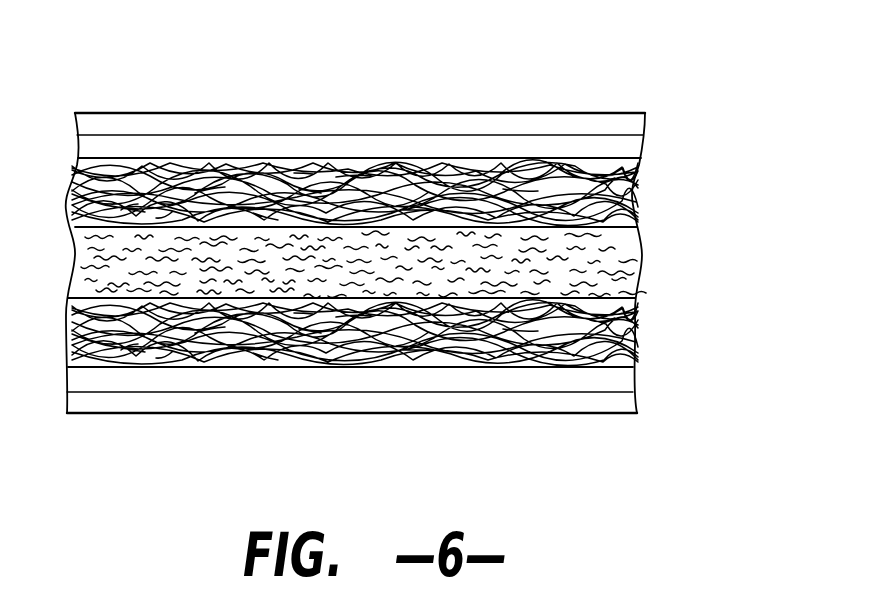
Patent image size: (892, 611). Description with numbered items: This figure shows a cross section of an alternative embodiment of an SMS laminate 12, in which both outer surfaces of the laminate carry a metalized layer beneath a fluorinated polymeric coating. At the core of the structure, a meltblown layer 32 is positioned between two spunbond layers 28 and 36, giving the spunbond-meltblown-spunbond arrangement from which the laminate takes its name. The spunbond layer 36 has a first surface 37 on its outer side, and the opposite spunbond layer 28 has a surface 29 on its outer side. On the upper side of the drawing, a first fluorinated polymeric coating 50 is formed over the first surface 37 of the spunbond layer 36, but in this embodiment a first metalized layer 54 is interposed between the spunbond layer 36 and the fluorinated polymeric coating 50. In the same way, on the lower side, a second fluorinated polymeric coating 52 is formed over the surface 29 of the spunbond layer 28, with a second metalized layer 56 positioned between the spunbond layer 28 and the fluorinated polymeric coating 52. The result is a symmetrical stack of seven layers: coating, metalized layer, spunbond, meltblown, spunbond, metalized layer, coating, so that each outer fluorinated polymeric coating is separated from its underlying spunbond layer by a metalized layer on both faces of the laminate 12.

The SMS laminate 12 is at (216, 86).
The spunbond layer 28 is at (635, 330).
The surface of spunbond layer 29 is at (430, 371).
The meltblown layer 32 is at (640, 265).
The spunbond layer 36 is at (632, 196).
The first surface of spunbond layer 37 is at (452, 158).
The first fluorinated polymeric coating 50 is at (627, 123).
The second fluorinated polymeric coating 52 is at (608, 400).
The first metalized layer 54 is at (625, 145).
The second metalized layer 56 is at (619, 375).